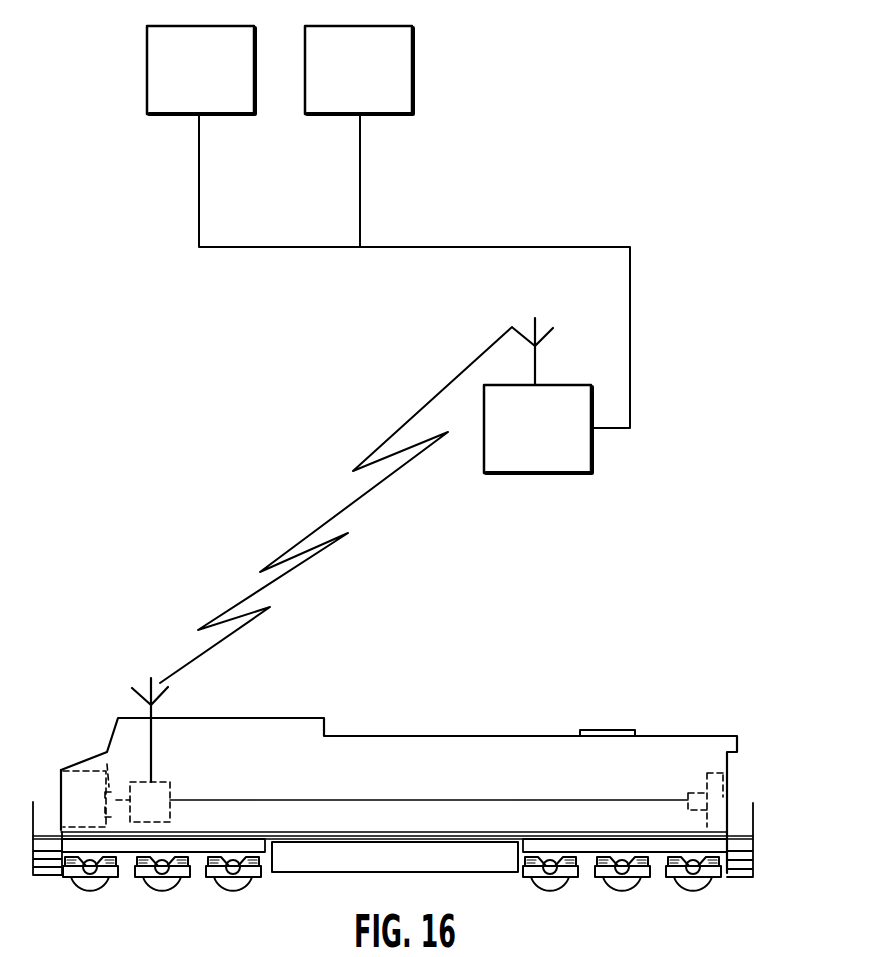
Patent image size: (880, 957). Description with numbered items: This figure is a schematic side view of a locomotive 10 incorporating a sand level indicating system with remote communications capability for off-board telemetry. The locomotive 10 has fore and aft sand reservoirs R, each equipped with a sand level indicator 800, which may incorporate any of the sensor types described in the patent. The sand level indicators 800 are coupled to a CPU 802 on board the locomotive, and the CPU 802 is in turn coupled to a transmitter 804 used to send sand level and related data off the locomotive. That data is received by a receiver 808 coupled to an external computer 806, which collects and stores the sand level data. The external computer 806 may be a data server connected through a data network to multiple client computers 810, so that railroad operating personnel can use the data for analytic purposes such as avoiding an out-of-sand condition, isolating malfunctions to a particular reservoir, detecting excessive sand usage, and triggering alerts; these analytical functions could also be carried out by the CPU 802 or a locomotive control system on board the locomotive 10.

The locomotive 10 is at (418, 714).
The sand level indicators 800 is at (107, 752).
The CPU 802 is at (172, 793).
The transmitter 804 is at (134, 691).
The external computer 806 is at (555, 441).
The receiver 808 is at (551, 336).
The client computers 810 is at (218, 81).
The sand reservoirs R is at (78, 759).